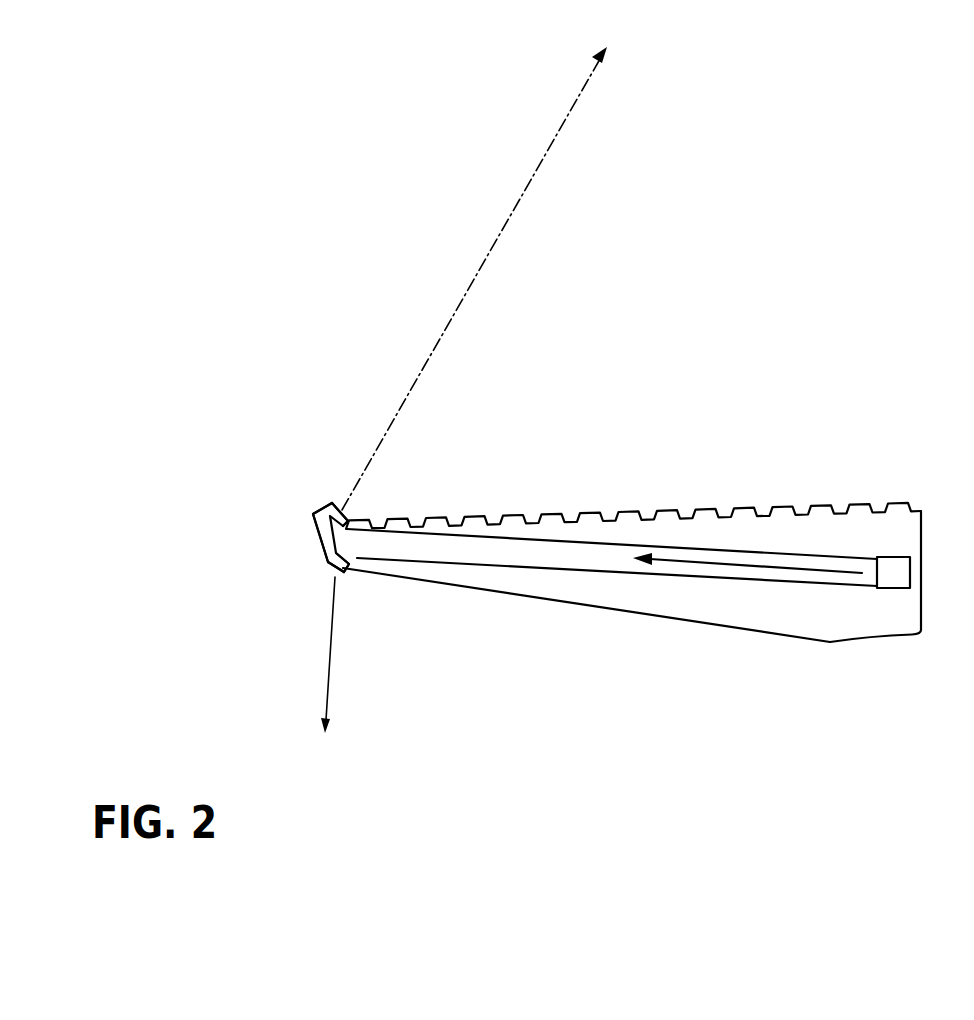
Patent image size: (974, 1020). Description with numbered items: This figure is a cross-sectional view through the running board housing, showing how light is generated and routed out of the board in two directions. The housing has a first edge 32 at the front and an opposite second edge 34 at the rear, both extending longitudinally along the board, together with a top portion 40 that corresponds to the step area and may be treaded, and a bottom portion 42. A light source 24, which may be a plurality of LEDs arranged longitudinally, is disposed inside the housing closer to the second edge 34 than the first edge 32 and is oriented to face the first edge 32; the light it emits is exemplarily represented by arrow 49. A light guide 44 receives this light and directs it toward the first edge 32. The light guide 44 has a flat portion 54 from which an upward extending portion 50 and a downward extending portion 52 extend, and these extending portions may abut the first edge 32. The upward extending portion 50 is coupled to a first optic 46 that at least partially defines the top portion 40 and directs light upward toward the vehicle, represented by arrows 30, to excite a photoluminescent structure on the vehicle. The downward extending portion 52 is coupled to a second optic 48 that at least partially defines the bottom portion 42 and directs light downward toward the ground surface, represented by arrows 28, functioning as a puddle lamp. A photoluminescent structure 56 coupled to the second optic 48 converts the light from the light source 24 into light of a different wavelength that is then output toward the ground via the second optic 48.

The light source 24 is at (895, 568).
The arrows 28 is at (328, 652).
The arrows 30 is at (522, 197).
The first edge 32 is at (318, 532).
The second edge 34 is at (921, 608).
The top portion 40 is at (585, 511).
The bottom portion 42 is at (600, 606).
The light guide 44 is at (683, 541).
The first optic 46 is at (344, 518).
The second optic 48 is at (337, 580).
The arrow 49 is at (690, 562).
The upward extending portion 50 is at (328, 503).
The downward extending portion 52 is at (352, 563).
The flat portion 54 is at (536, 568).
The photoluminescent structure 56 is at (327, 548).